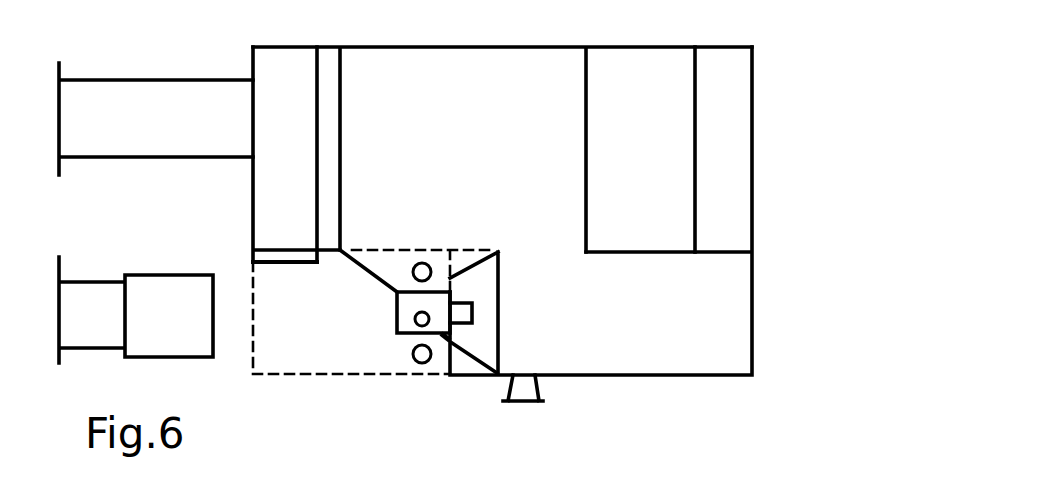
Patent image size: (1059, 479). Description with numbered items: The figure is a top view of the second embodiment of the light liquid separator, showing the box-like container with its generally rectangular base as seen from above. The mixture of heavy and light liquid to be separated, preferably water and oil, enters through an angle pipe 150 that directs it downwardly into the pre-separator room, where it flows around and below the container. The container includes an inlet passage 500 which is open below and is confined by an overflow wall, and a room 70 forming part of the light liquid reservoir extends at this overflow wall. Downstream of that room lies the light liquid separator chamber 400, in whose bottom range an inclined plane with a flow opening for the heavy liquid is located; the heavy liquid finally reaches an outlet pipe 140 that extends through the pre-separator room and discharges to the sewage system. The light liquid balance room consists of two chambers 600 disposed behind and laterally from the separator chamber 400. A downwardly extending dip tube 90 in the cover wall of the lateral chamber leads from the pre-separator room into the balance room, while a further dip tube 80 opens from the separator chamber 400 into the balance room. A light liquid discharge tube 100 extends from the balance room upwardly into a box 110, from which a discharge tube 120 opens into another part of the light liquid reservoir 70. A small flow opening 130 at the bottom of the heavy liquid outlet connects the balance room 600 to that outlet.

The room forming part of the light liquid reservoir 70 is at (645, 75).
The dip tube 80 is at (432, 262).
The dip tube 90 is at (426, 362).
The light liquid discharge tube 100 is at (413, 320).
The box 110 is at (448, 339).
The discharge tube 120 is at (459, 312).
The small flow opening 130 is at (283, 248).
The outlet pipe 140 is at (155, 95).
The angle pipe 150 is at (97, 302).
The light liquid separator chamber 400 is at (552, 149).
The inlet passage 500 is at (733, 152).
The light liquid balance room chamber 600 is at (283, 62).